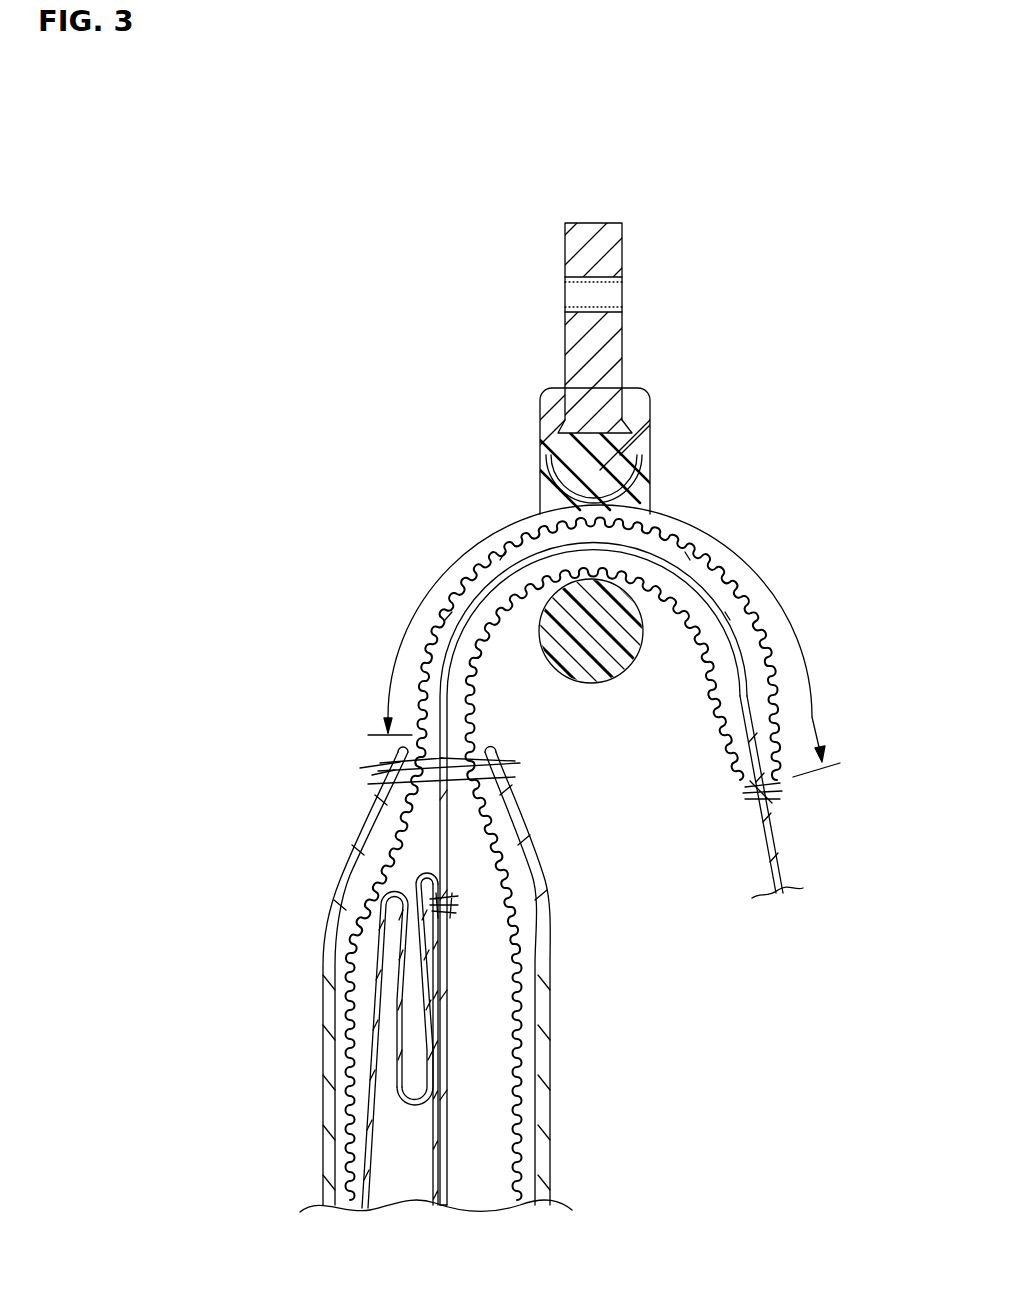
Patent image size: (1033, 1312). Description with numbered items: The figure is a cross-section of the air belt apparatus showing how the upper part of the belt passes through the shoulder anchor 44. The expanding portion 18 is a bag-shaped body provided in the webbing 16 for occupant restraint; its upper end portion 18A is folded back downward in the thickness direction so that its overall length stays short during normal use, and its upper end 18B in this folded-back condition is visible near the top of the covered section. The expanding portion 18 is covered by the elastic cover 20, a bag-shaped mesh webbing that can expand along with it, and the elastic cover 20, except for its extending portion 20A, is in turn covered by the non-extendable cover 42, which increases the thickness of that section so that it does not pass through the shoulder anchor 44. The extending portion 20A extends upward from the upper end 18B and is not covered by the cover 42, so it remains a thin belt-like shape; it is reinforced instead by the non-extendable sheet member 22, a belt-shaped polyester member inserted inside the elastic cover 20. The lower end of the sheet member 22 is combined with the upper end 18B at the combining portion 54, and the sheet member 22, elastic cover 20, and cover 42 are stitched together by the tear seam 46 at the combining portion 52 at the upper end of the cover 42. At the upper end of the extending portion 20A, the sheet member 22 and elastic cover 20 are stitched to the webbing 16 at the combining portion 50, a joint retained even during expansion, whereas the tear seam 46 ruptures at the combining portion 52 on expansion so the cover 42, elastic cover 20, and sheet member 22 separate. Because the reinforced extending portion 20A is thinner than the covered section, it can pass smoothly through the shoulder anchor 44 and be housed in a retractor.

The shoulder anchor 44 is at (650, 435).
The extending portion 20A is at (706, 516).
The sheet member 22 is at (731, 645).
The webbing for occupant restraint 16 is at (781, 847).
The combining portion 50 is at (783, 791).
The combining portion 52 is at (385, 768).
The tear seam 46 is at (516, 762).
The combining portion 54 is at (457, 906).
The cover 42 is at (552, 941).
The elastic cover 20 is at (520, 1043).
The upper end 18B is at (428, 874).
The upper end portion 18A is at (415, 1106).
The expanding portion 18 is at (450, 1157).